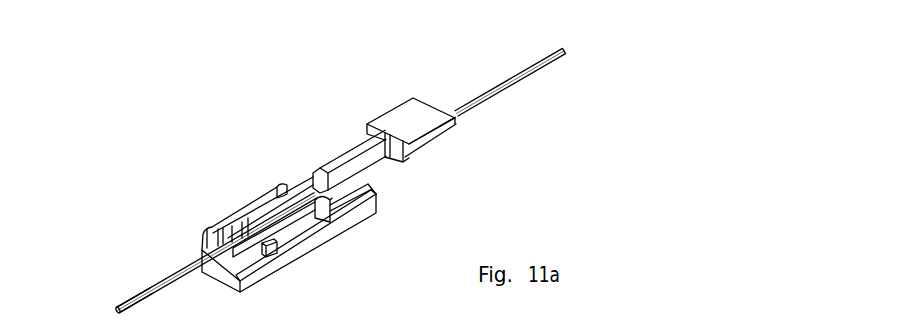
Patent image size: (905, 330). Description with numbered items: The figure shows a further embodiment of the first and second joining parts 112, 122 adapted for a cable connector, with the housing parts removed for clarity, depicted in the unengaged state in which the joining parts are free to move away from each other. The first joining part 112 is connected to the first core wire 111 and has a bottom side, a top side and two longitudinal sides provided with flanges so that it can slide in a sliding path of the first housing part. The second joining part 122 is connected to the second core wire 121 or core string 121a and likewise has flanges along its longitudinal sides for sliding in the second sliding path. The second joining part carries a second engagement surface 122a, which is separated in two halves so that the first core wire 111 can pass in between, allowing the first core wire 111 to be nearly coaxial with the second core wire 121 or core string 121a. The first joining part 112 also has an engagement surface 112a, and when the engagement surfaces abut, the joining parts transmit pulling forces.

The first core wire 111 is at (143, 292).
The first joining part 112 is at (402, 123).
The connector tab 112a is at (363, 134).
The second core wire 121 is at (347, 180).
The core string 121a is at (478, 104).
The second joining part 122 is at (232, 208).
The second engagement surface 122a is at (332, 199).